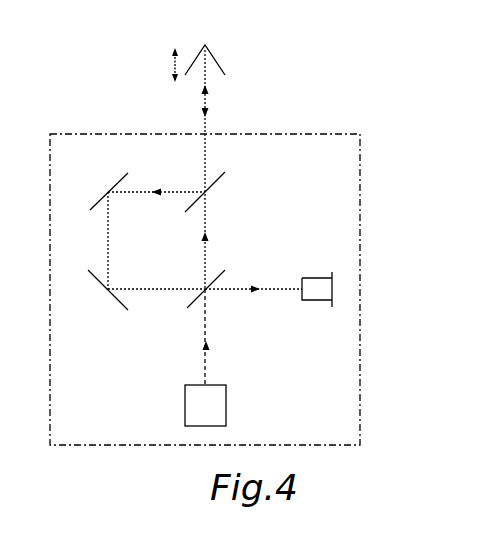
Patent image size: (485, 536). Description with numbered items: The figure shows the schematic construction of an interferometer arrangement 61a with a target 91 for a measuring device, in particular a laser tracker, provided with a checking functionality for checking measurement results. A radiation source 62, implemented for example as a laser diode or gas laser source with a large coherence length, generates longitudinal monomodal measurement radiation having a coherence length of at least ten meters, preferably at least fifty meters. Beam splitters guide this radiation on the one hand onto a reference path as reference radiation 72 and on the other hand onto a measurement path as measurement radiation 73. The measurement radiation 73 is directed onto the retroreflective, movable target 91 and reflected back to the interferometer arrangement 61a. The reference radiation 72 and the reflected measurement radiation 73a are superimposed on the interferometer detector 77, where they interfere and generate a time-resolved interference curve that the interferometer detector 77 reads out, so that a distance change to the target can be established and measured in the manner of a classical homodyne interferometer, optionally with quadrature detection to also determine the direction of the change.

The interferometer arrangement 61a is at (245, 289).
The target 91 is at (231, 88).
The reflected measurement radiation 73a is at (165, 188).
The measurement radiation 73 is at (237, 192).
The reference radiation 72 is at (243, 309).
The interferometer detector 77 is at (311, 278).
The radiation source 62 is at (172, 402).